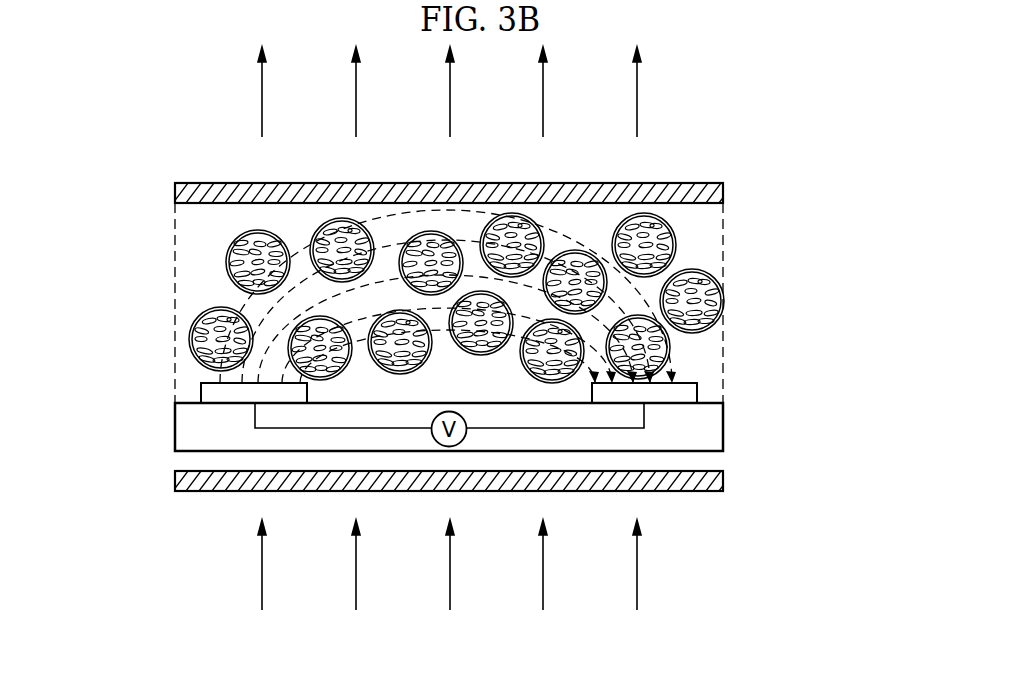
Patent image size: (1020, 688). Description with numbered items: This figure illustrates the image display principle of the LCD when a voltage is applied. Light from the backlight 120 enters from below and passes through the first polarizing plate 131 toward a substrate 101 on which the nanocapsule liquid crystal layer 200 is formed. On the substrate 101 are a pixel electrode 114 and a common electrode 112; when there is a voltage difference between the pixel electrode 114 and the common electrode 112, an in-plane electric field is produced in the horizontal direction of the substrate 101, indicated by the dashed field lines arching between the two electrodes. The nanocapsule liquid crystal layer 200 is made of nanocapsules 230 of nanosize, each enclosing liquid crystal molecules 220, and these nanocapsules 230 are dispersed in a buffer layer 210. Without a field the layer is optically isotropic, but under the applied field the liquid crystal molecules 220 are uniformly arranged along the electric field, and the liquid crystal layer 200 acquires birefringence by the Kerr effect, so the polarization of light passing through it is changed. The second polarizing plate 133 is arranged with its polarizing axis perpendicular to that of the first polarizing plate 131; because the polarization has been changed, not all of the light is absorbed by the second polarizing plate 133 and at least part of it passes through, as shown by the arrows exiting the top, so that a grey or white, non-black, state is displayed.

The substrate 101 is at (710, 434).
The common electrode 112 is at (697, 384).
The pixel electrode 114 is at (208, 391).
The backlight 120 is at (449, 584).
The first polarizing plate 131 is at (723, 480).
The second polarizing plate 133 is at (725, 182).
The nanocapsule liquid crystal layer 200 is at (541, 298).
The buffer layer 210 is at (713, 338).
The liquid crystal molecules 220 is at (713, 292).
The nanocapsule 230 is at (713, 268).